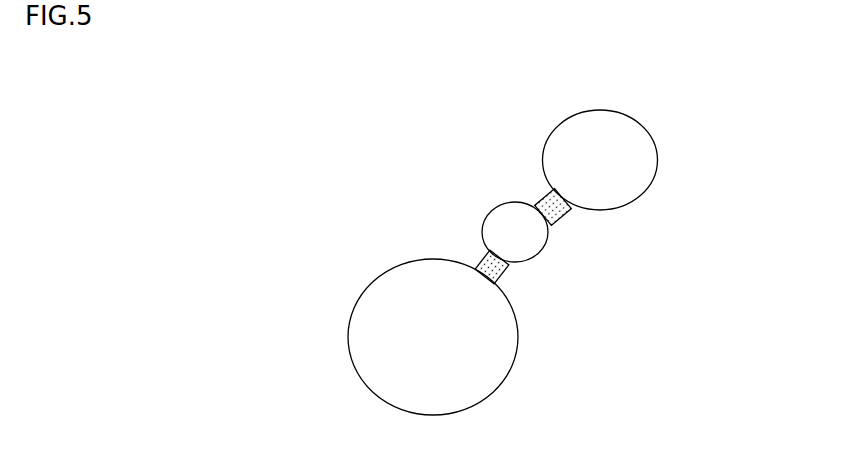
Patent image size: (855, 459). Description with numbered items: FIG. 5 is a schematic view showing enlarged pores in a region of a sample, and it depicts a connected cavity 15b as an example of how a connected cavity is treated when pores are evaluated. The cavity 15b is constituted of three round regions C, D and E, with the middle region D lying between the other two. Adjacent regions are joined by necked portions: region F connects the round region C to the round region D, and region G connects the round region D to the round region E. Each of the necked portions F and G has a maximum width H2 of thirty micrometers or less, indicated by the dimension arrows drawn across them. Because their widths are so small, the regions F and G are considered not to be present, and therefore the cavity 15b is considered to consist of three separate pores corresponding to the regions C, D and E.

The cavity 15b is at (633, 105).
The round region C is at (392, 364).
The round region D is at (530, 242).
The round region E is at (610, 153).
The necked portion F is at (487, 255).
The necked portion G is at (540, 202).
The maximum width of necked portion H2 is at (480, 257).